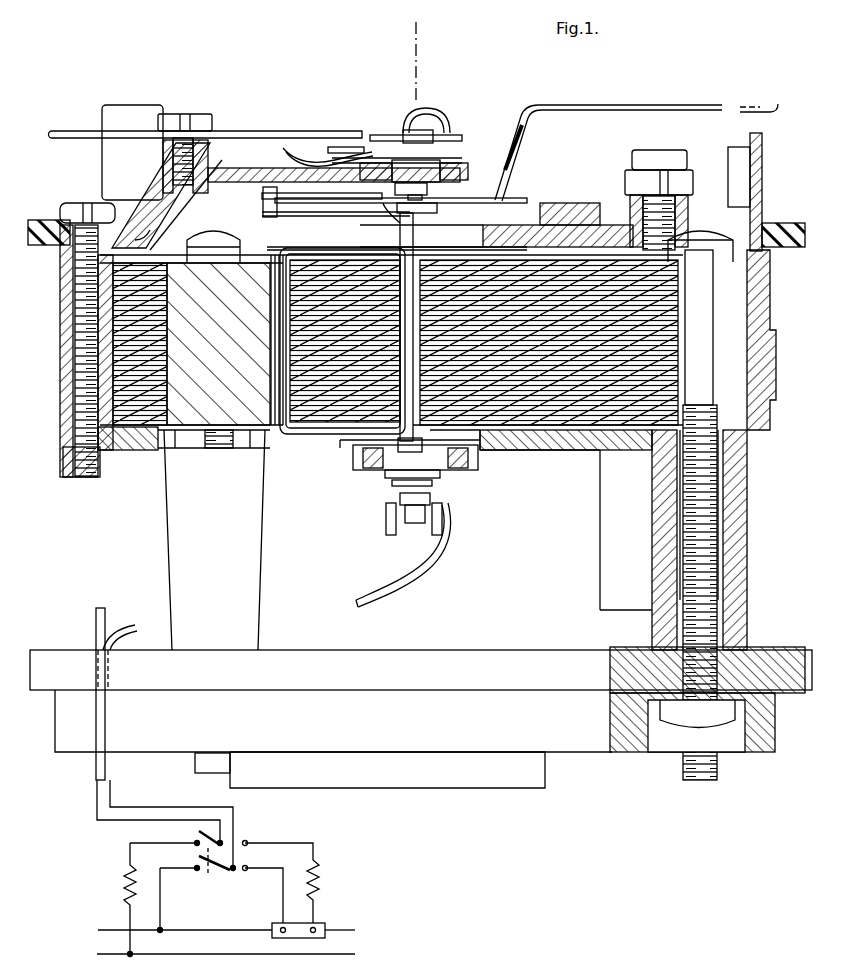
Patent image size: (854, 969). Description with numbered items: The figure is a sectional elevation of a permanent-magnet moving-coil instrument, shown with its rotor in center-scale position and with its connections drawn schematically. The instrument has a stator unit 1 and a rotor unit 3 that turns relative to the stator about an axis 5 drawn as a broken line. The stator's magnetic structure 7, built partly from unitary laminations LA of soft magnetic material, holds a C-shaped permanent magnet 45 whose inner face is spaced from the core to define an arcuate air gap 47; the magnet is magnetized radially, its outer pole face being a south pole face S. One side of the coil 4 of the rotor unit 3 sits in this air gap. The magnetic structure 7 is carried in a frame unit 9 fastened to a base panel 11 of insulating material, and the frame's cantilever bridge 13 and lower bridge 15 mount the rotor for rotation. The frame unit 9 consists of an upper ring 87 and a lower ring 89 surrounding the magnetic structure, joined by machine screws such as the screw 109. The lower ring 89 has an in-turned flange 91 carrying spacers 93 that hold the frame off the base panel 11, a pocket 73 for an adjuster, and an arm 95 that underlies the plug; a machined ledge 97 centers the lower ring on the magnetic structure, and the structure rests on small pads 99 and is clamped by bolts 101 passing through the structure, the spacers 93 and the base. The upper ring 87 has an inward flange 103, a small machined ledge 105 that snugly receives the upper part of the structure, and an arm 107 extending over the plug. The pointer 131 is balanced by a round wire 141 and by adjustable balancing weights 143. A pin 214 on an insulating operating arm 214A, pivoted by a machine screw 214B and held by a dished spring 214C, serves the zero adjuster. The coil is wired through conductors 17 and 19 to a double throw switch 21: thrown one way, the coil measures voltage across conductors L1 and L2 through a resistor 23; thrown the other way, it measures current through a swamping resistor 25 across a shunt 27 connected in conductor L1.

The stator unit 1 is at (298, 571).
The rotor unit 3 is at (320, 435).
The coil 4 is at (350, 435).
The axis 5 is at (416, 68).
The magnetic structure 7 is at (75, 282).
The frame unit 9 is at (168, 526).
The panel 11 is at (324, 650).
The bridge 13 is at (262, 170).
The bridge 15 is at (462, 472).
The conductor 17 is at (296, 147).
The conductor 19 is at (448, 555).
The double throw switch 21 is at (166, 838).
The resistor 23 is at (124, 880).
The swamping resistor 25 is at (316, 878).
The shunt 27 is at (316, 922).
The permanent magnet 45 is at (264, 226).
The air gap 47 is at (272, 432).
The pocket 73 is at (600, 557).
The ring 87 is at (62, 308).
The ring 89 is at (62, 372).
The flange 91 is at (140, 450).
The spacer 93 is at (170, 560).
The arm 95 is at (578, 450).
The ledge 97 is at (762, 425).
The pad 99 is at (245, 440).
The bolt 101 is at (190, 249).
The flange 103 is at (142, 246).
The ledge 105 is at (752, 266).
The arm 107 is at (584, 244).
The screw 109 is at (80, 402).
The pointer 131 is at (512, 145).
The wire 141 is at (500, 200).
The balancing weight 143 is at (262, 196).
The pin 214 is at (352, 146).
The operating arm 214A is at (68, 130).
The machine screw 214B is at (190, 114).
The dished spring 214C is at (208, 131).
The conductor L1 is at (358, 928).
The conductor L2 is at (358, 952).
The laminations LA is at (752, 287).
The south pole face S is at (772, 104).